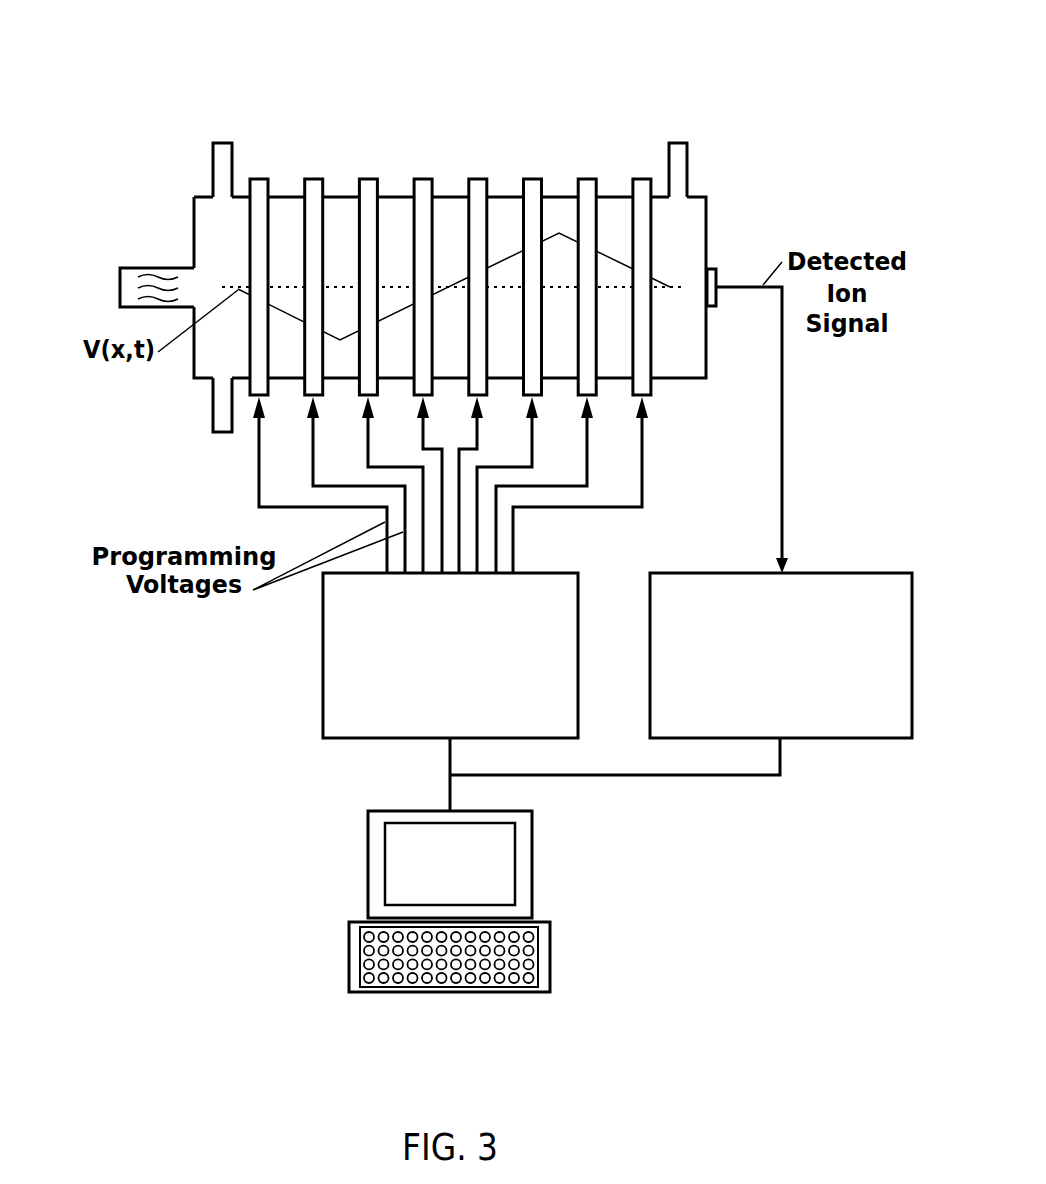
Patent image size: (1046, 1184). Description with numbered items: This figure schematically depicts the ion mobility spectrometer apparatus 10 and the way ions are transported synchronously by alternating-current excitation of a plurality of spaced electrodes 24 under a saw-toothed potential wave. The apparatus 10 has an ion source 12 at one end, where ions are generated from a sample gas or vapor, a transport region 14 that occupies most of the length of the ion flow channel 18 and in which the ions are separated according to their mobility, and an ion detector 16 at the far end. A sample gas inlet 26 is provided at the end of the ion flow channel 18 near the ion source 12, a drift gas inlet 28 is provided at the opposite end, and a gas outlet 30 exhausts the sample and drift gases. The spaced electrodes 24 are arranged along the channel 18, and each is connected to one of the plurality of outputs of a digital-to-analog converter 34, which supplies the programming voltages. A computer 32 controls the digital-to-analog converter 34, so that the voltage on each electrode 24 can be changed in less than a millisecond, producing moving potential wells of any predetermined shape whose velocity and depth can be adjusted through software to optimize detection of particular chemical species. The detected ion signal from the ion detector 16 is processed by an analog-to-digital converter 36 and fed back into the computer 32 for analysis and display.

The ion mobility spectrometer apparatus 10 is at (698, 850).
The ion source 12 is at (157, 268).
The transport region 14 is at (683, 287).
The ion detector 16 is at (712, 306).
The ion flow channel 18 is at (572, 197).
The spaced electrodes 24 is at (652, 133).
The sample gas inlet 26 is at (223, 143).
The drift gas inlet 28 is at (678, 143).
The gas outlet 30 is at (216, 435).
The computer 32 is at (349, 953).
The digital-to-analog converter 34 is at (436, 717).
The analog-to-digital converter 36 is at (767, 717).